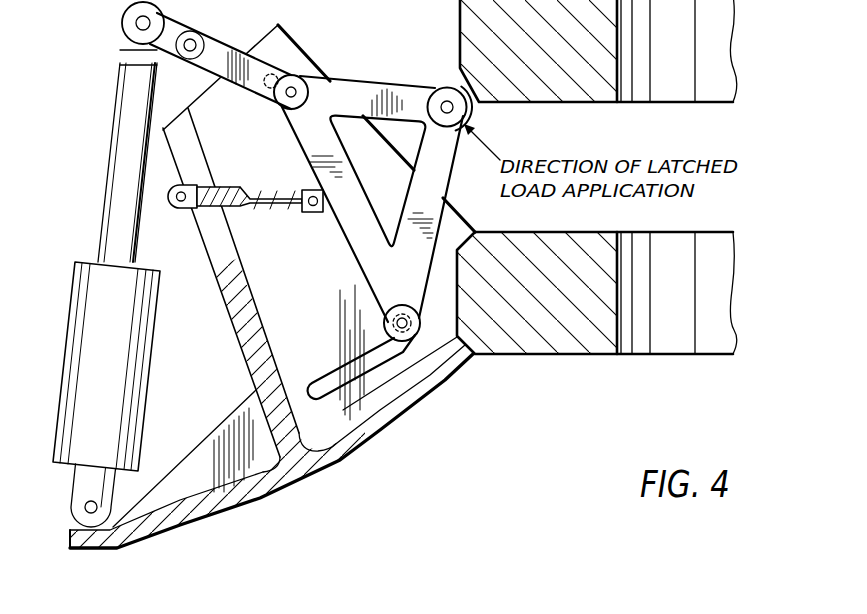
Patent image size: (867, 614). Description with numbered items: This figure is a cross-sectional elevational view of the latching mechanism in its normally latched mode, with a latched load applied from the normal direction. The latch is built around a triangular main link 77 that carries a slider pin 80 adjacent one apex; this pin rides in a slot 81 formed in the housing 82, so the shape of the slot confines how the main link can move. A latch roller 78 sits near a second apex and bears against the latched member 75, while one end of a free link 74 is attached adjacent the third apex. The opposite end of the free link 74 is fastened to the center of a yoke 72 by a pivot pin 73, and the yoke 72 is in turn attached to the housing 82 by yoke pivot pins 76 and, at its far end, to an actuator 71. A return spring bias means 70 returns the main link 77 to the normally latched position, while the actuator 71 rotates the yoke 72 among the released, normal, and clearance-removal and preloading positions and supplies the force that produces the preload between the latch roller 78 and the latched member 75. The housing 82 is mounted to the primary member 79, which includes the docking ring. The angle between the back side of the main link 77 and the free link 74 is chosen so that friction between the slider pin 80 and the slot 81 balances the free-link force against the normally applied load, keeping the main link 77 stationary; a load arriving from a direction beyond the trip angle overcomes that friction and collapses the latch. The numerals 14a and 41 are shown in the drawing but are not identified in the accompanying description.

The aircraft structure 14a is at (39, 7).
The latch member 41 is at (319, 228).
The return spring bias means 70 is at (250, 208).
The actuator 71 is at (109, 156).
The yoke 72 is at (121, 52).
The pivot pin 73 is at (188, 51).
The free link 74 is at (240, 52).
The latched member 75 is at (604, 104).
The yoke pivot pins 76 is at (275, 75).
The main link 77 is at (369, 79).
The latch roller 78 is at (447, 86).
The primary member 79 is at (577, 357).
The slider pin 80 is at (412, 330).
The slot 81 is at (363, 372).
The housing 82 is at (347, 458).